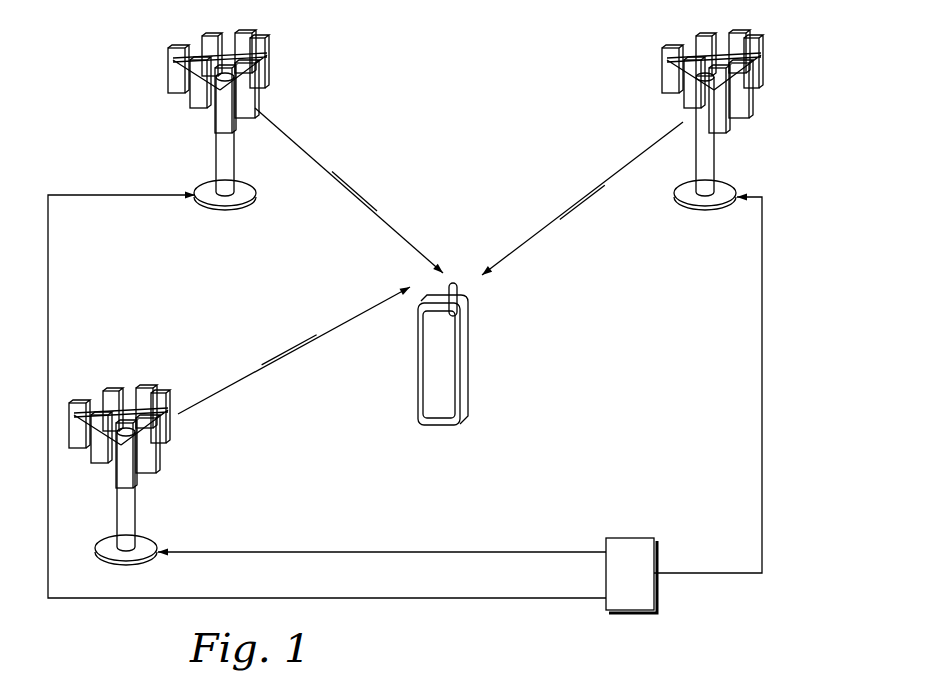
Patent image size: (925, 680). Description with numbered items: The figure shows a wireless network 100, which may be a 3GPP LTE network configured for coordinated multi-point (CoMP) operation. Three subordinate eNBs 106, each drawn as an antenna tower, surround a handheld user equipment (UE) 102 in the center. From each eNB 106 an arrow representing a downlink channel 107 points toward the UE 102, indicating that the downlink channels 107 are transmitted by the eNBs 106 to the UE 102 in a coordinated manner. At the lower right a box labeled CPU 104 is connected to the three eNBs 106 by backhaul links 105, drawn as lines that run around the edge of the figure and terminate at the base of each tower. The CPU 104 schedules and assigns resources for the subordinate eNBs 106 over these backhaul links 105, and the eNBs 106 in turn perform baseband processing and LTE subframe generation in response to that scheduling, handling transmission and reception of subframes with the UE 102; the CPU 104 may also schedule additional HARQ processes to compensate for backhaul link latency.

The wireless network 100 is at (507, 48).
The user equipment (UE) 102 is at (462, 360).
The CPU 104 is at (633, 538).
The backhaul links 105 is at (565, 551).
The subordinate eNBs 106 is at (176, 44).
The downlink channels 107 is at (353, 188).